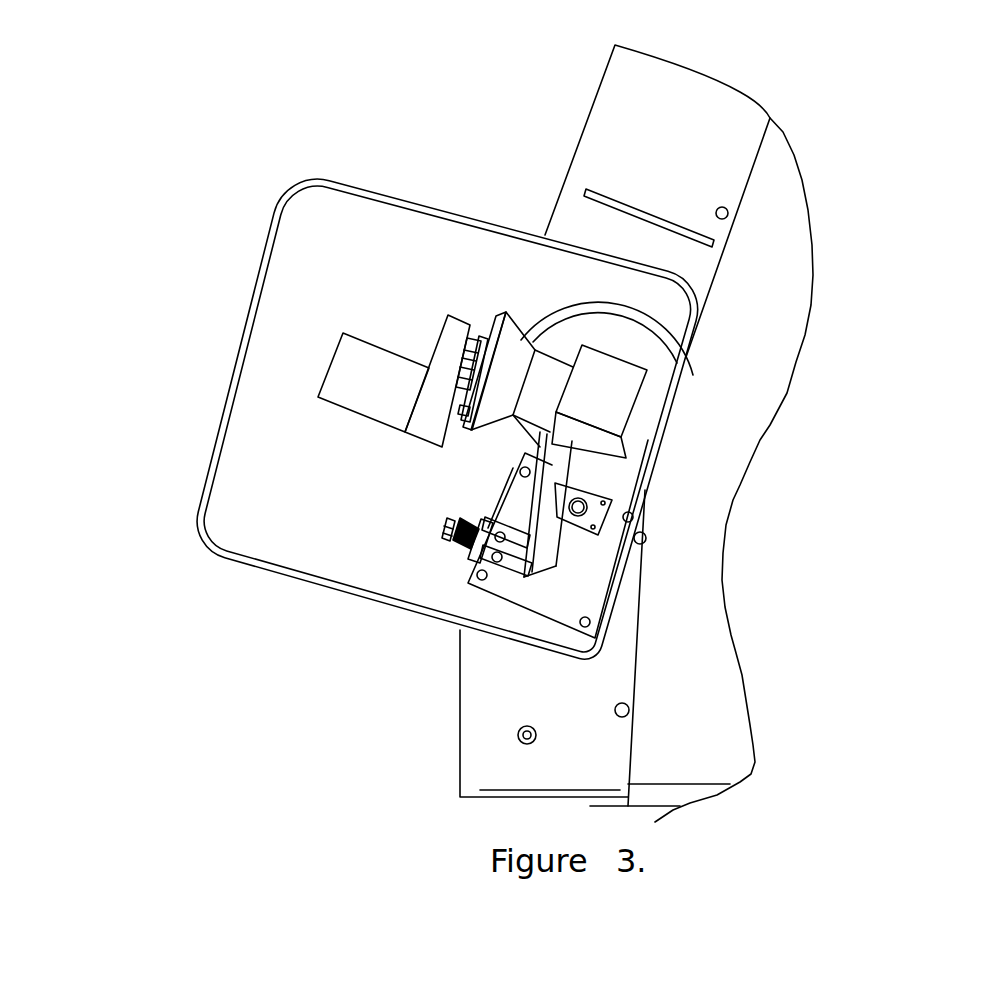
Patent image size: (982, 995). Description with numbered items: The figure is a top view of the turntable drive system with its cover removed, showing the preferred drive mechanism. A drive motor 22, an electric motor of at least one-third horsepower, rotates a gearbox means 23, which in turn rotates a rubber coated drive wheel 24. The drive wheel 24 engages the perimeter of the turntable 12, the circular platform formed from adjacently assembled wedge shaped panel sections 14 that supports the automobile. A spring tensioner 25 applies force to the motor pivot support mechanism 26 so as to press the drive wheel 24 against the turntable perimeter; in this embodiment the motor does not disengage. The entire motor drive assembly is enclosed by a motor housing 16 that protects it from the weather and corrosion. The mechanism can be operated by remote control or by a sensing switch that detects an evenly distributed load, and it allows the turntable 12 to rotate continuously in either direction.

The turntable 12 is at (742, 175).
The wedge shaped panel section 14 is at (685, 661).
The motor housing 16 is at (298, 586).
The drive motor 22 is at (371, 383).
The gearbox means 23 is at (599, 386).
The rubber coated drive wheel 24 is at (663, 308).
The spring tensioner 25 is at (460, 550).
The motor pivot support mechanism 26 is at (598, 493).